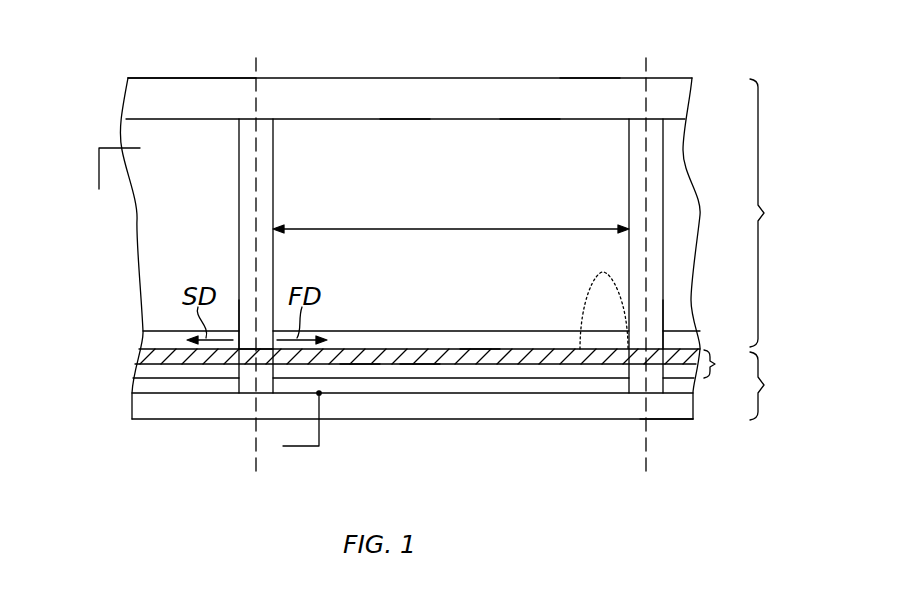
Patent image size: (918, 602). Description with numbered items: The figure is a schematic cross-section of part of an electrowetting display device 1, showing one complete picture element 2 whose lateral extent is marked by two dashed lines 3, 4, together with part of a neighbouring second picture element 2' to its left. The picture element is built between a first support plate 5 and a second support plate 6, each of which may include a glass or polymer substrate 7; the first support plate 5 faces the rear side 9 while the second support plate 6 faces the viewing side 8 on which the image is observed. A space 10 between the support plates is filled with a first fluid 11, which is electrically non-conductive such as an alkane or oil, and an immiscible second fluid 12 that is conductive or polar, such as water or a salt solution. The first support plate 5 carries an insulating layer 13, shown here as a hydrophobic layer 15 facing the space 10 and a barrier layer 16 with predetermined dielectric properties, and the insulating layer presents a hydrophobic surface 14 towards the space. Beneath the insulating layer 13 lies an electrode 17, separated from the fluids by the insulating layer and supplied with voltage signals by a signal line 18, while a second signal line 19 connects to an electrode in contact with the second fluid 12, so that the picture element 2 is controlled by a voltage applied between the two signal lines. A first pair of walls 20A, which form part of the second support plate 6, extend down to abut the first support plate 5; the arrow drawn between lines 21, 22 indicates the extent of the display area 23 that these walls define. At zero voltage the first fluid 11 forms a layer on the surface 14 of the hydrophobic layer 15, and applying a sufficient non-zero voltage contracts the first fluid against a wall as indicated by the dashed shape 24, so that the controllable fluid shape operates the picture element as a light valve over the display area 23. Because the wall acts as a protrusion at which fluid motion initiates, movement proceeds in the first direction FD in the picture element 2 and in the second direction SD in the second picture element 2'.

The electrowetting display device 1 is at (726, 69).
The picture element 2 is at (410, 47).
The second picture element 2' is at (192, 46).
The dashed line 3 is at (257, 62).
The dashed line 4 is at (647, 62).
The first support plate 5 is at (461, 386).
The second support plate 6 is at (769, 213).
The substrate 7 is at (588, 88).
The viewing side 8 is at (348, 78).
The rear side 9 is at (412, 421).
The space 10 is at (530, 147).
The first fluid 11 is at (540, 340).
The second fluid 12 is at (403, 147).
The insulating layer 13 is at (443, 365).
The hydrophobic surface 14 is at (480, 350).
The hydrophobic layer 15 is at (420, 365).
The barrier layer 16 is at (360, 365).
The electrode 17 is at (520, 386).
The signal line 18 is at (302, 447).
The second signal line 19 is at (99, 168).
The first pair of walls 20A is at (246, 330).
The line 21 is at (274, 175).
The line 22 is at (628, 175).
The display area 23 is at (451, 215).
The dashed shape 24 is at (588, 284).